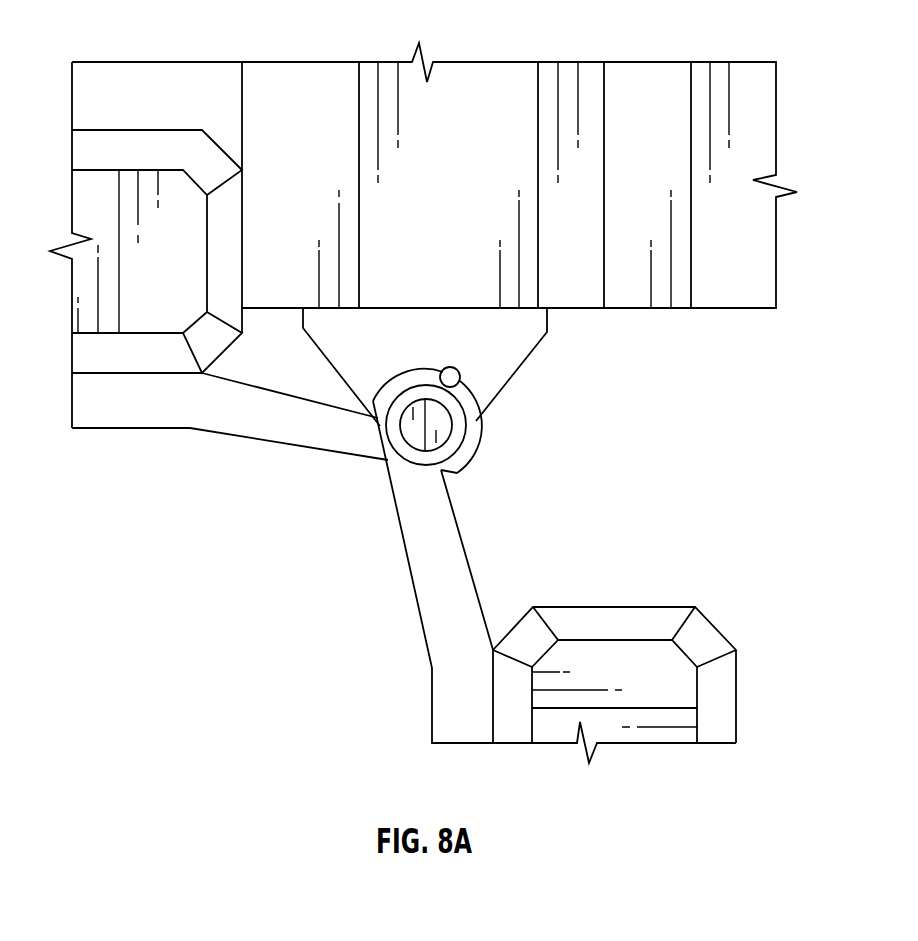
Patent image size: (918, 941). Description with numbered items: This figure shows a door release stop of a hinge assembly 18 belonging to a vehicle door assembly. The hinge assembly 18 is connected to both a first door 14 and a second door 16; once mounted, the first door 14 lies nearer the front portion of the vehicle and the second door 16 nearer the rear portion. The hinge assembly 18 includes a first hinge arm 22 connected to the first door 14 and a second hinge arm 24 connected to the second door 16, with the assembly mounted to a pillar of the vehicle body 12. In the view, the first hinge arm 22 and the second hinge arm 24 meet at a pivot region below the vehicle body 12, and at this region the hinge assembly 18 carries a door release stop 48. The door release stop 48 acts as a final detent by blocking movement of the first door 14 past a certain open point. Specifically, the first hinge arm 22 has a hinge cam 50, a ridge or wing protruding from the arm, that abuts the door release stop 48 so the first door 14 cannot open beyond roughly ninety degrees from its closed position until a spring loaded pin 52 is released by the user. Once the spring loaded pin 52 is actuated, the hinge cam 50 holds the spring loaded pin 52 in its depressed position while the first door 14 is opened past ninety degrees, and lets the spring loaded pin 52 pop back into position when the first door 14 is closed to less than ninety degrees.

The vehicle body 12 is at (605, 80).
The first door 14 is at (662, 713).
The second door 16 is at (133, 150).
The hinge assembly 18 is at (429, 318).
The first hinge arm 22 is at (432, 603).
The second hinge arm 24 is at (225, 420).
The door release stop 48 is at (495, 435).
The hinge cam 50 is at (398, 384).
The spring loaded pin 52 is at (460, 381).